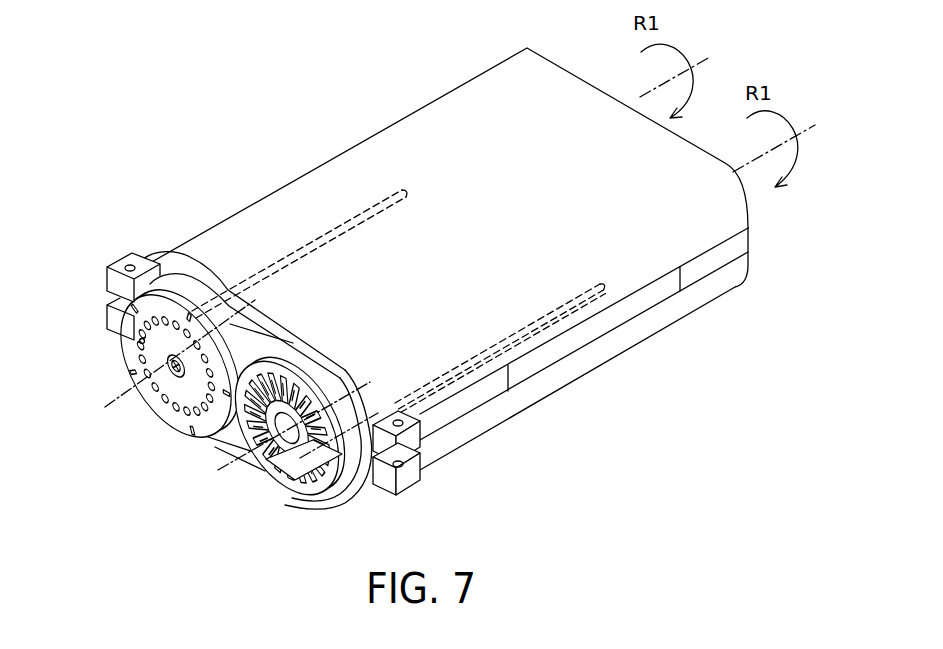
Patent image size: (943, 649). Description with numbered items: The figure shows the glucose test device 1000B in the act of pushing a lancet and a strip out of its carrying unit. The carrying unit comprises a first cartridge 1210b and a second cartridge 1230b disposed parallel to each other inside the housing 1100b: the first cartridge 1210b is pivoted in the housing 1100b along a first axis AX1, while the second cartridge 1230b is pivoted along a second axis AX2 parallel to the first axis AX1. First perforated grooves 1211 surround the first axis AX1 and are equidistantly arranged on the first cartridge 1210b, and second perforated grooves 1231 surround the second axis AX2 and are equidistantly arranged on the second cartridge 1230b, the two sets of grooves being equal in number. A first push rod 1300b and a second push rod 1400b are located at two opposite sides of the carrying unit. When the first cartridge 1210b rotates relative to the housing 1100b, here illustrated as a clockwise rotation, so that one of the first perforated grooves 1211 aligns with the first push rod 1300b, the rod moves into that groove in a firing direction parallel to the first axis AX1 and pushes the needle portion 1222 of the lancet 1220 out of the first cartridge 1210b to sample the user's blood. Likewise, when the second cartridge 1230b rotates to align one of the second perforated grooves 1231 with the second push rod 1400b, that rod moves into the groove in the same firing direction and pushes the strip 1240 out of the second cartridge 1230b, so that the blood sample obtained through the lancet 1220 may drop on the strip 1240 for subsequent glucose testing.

The glucose test device 1000B is at (750, 529).
The housing 1100b is at (495, 64).
The second push rod 1400b is at (511, 368).
The first push rod 1300b is at (306, 247).
The first cartridge 1210b is at (162, 288).
The first perforated grooves 1211 is at (110, 310).
The lancet 1220 is at (145, 363).
The needle portion 1222 is at (141, 341).
The second cartridge 1230b is at (349, 468).
The second perforated grooves 1231 is at (418, 472).
The strip 1240 is at (280, 470).
The first axis AX1 is at (180, 365).
The second axis AX2 is at (276, 436).